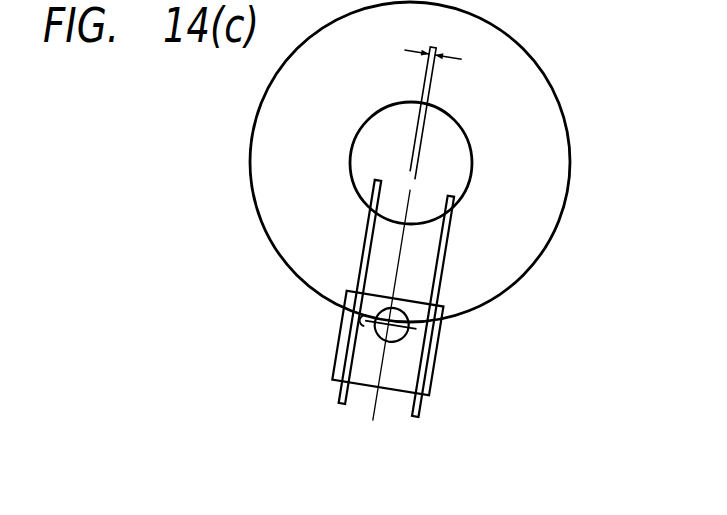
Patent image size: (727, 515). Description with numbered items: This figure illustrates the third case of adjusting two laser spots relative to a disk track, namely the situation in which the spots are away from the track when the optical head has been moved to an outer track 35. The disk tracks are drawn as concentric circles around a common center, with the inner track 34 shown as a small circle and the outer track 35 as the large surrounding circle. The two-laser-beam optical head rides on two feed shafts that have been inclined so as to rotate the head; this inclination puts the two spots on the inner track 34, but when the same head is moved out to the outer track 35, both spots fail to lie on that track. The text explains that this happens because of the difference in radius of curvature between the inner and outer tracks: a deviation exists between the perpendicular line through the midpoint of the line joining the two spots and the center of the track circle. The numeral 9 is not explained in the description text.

The pin 9 is at (383, 341).
The inner track 34 is at (472, 166).
The outer track 35 is at (566, 198).